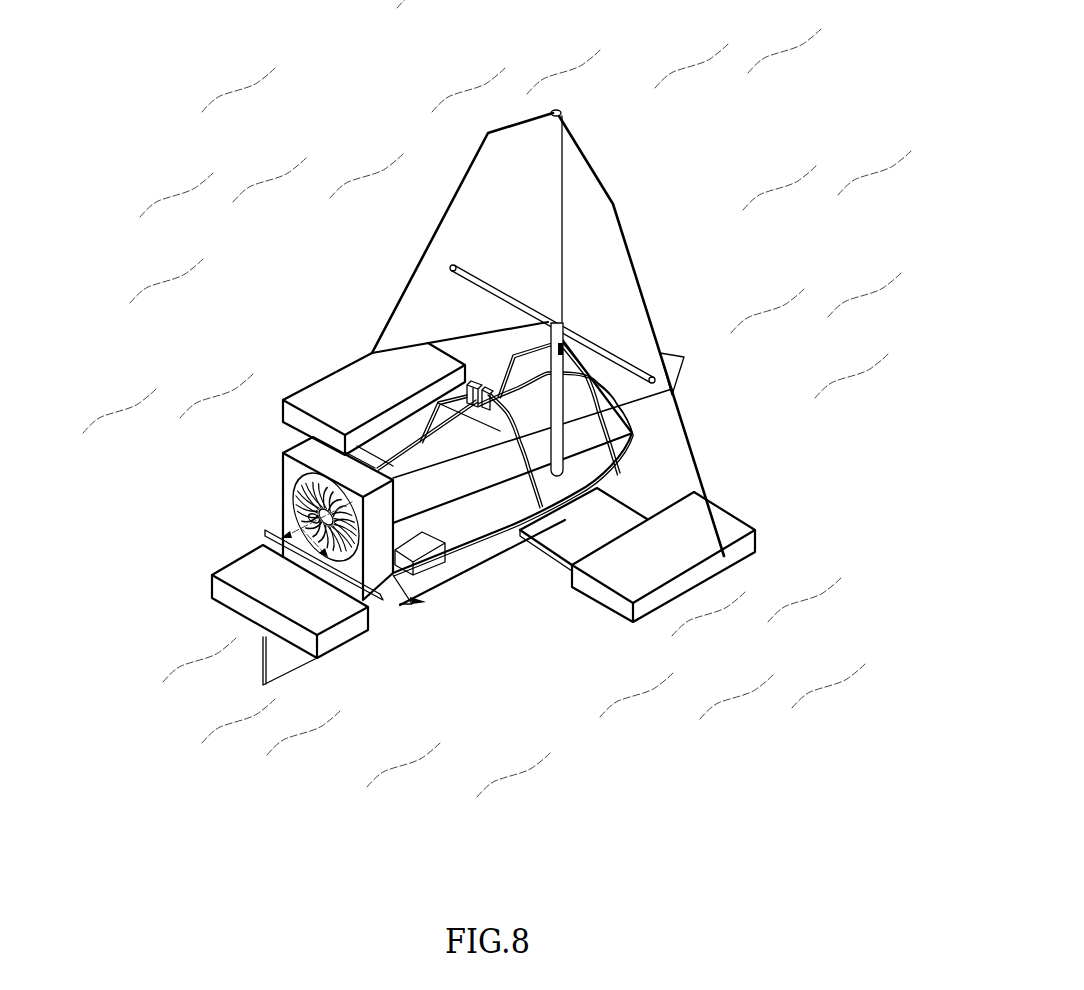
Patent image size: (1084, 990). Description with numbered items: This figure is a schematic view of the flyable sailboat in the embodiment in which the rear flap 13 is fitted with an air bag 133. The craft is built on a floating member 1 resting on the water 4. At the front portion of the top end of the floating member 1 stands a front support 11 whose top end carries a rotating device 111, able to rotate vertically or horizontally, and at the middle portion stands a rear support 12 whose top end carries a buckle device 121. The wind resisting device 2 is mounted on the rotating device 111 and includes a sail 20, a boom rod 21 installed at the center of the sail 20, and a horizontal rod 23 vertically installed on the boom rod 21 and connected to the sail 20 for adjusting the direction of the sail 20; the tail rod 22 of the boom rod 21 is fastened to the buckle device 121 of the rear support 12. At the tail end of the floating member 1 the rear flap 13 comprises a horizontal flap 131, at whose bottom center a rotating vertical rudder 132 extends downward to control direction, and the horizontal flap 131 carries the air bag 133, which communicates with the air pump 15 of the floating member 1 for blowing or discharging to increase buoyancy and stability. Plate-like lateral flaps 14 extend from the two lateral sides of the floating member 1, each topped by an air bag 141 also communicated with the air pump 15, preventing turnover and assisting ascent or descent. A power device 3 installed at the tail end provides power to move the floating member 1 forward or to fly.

The floating member 1 is at (519, 482).
The wind resisting device 2 is at (513, 308).
The power device 3 is at (293, 480).
The water 4 is at (312, 733).
The front support 11 is at (533, 378).
The rear support 12 is at (515, 537).
The rear flap 13 is at (296, 624).
The lateral flap 14 is at (520, 504).
The air pump 15 is at (428, 562).
The sail 20 is at (608, 258).
The boom rod 21 is at (566, 114).
The tail rod 22 is at (590, 463).
The horizontal rod 23 is at (453, 268).
The rotating device 111 is at (467, 384).
The buckle device 121 is at (372, 353).
The horizontal flap 131 is at (220, 607).
The rotating vertical rudder 132 is at (273, 663).
The air bag 133 is at (228, 572).
The air bag 141 is at (298, 392).